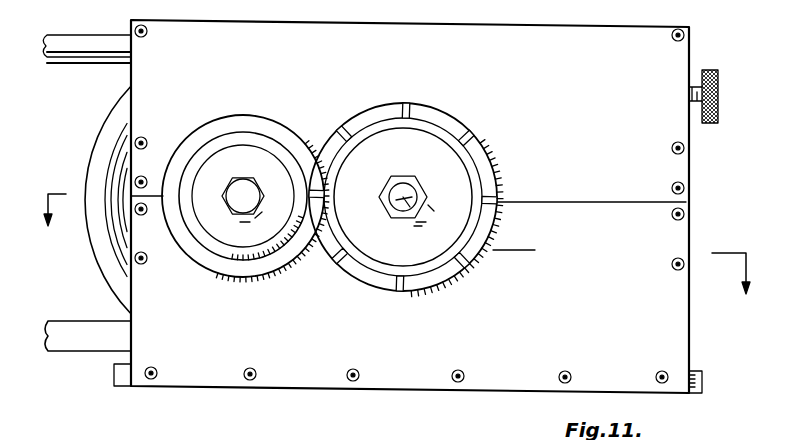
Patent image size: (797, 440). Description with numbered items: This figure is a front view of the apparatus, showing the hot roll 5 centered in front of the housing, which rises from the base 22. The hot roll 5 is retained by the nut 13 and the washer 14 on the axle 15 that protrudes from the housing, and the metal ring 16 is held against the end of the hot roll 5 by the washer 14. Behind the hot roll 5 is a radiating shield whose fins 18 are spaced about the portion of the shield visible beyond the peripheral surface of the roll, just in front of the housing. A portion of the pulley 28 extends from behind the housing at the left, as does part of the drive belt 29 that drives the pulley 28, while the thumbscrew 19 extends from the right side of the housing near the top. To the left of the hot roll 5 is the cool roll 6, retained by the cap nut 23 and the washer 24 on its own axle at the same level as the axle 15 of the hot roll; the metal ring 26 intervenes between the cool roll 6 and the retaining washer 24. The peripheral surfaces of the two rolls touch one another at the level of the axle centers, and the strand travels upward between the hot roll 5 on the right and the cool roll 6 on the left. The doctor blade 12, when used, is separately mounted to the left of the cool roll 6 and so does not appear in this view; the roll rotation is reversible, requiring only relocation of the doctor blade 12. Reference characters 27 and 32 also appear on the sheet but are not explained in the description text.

The hot roll 5 is at (475, 170).
The cool roll 6 is at (246, 118).
The doctor blade 12 is at (396, 256).
The nut 13 is at (390, 203).
The washer 14 is at (410, 180).
The axle 15 is at (400, 190).
The metal ring 16 is at (438, 147).
The fins 18 is at (416, 103).
The thumbscrew 19 is at (718, 82).
The base 22 is at (702, 383).
The cap nut 23 is at (237, 193).
The washer 24 is at (228, 157).
The metal ring 26 is at (276, 143).
The housing plate 27 is at (516, 32).
The pulley 28 is at (108, 130).
The drive belt 29 is at (68, 38).
The base 32 is at (255, 434).